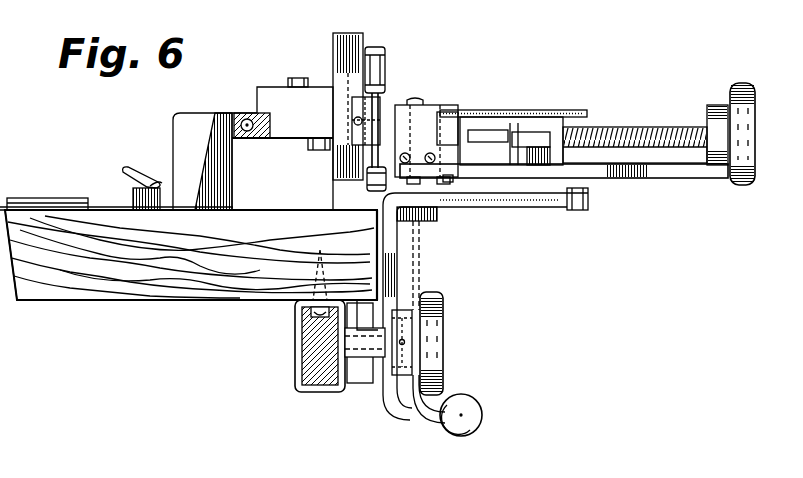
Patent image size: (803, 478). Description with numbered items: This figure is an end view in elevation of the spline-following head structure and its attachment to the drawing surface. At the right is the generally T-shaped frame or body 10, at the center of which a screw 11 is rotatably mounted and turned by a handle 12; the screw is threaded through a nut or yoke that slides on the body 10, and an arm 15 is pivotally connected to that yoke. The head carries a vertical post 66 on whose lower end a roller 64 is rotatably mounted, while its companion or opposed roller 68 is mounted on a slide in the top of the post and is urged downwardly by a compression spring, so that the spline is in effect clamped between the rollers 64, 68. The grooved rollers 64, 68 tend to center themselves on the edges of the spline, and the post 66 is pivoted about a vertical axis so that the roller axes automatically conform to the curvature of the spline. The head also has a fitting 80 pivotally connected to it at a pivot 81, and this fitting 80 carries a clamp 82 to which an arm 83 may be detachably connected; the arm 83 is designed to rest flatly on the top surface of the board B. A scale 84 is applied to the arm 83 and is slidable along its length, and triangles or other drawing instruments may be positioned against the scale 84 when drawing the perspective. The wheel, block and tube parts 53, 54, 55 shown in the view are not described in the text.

The board B is at (100, 285).
The frame or body 10 is at (690, 176).
The screw 11 is at (676, 128).
The handle 12 is at (748, 86).
The arm 15 is at (493, 143).
The block 53 is at (297, 375).
The tube 54 is at (392, 270).
The wheel 55 is at (443, 348).
The roller 64 is at (370, 190).
The vertical post 66 is at (363, 34).
The roller 68 is at (379, 72).
The fitting 80 is at (187, 118).
The pivot 81 is at (243, 120).
The clamp 82 is at (130, 166).
The arm 83 is at (97, 207).
The scale 84 is at (20, 198).